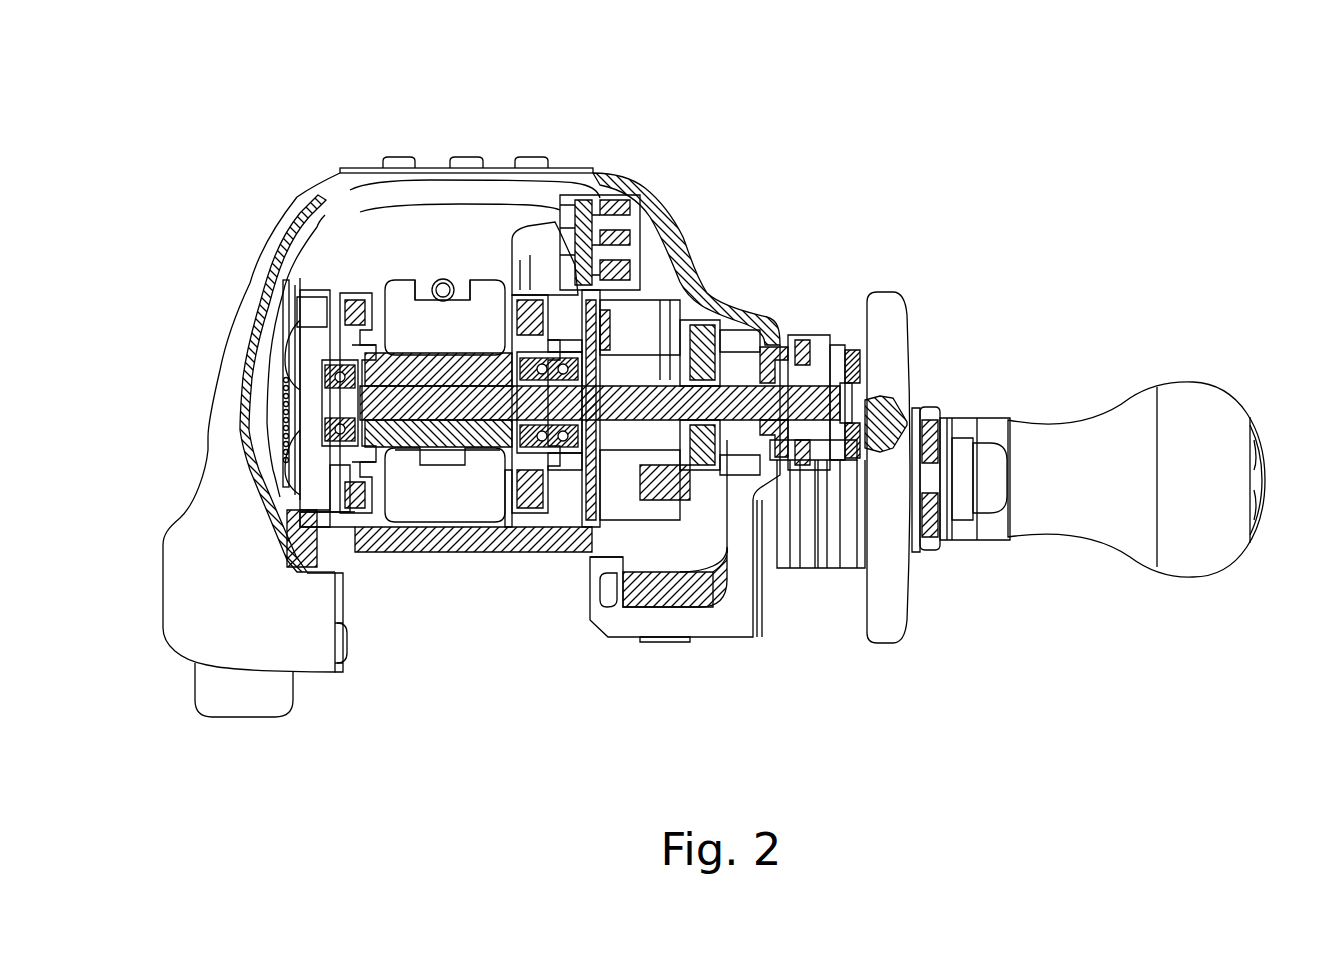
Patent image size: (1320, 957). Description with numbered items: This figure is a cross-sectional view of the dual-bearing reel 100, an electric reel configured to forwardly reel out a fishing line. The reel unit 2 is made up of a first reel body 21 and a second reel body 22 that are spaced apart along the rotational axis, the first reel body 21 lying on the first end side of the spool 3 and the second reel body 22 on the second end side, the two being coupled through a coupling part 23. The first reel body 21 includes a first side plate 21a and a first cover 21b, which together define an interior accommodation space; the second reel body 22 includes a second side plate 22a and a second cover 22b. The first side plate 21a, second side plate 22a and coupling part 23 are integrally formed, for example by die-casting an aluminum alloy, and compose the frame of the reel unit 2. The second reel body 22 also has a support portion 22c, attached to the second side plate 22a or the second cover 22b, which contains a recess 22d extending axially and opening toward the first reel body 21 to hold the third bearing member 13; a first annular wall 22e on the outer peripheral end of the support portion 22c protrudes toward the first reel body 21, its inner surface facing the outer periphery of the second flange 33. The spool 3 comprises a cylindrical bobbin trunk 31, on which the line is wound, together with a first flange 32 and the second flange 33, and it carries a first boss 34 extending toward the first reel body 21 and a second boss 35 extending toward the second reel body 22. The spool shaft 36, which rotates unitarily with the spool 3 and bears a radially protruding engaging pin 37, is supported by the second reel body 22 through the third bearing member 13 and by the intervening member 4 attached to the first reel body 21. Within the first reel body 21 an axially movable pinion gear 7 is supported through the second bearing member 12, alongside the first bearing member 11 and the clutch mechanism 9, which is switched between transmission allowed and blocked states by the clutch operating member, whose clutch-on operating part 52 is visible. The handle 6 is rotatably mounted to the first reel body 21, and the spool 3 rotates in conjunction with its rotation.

The dual-bearing reel 100 is at (772, 142).
The reel unit 2 is at (682, 215).
The spool 3 is at (406, 462).
The intervening member 4 is at (540, 470).
The handle 6 is at (1078, 442).
The pinion gear 7 is at (588, 560).
The clutch mechanism 9 is at (610, 348).
The first bearing member 11 is at (545, 256).
The second bearing member 12 is at (645, 360).
The third bearing member 13 is at (328, 354).
The first reel body 21 is at (705, 640).
The first side plate 21a is at (609, 620).
The first cover 21b is at (650, 638).
The second reel body 22 is at (302, 690).
The second side plate 22a is at (345, 678).
The second cover 22b is at (318, 677).
The support portion 22c is at (305, 292).
The recess 22d is at (323, 430).
The first annular wall 22e is at (345, 250).
The coupling part 23 is at (393, 540).
The bobbin trunk 31 is at (428, 352).
The first flange 32 is at (478, 348).
The second flange 33 is at (393, 260).
The first boss 34 is at (511, 496).
The second boss 35 is at (370, 470).
The spool shaft 36 is at (452, 408).
The engaging pin 37 is at (555, 465).
The clutch-on operating part 52 is at (522, 250).